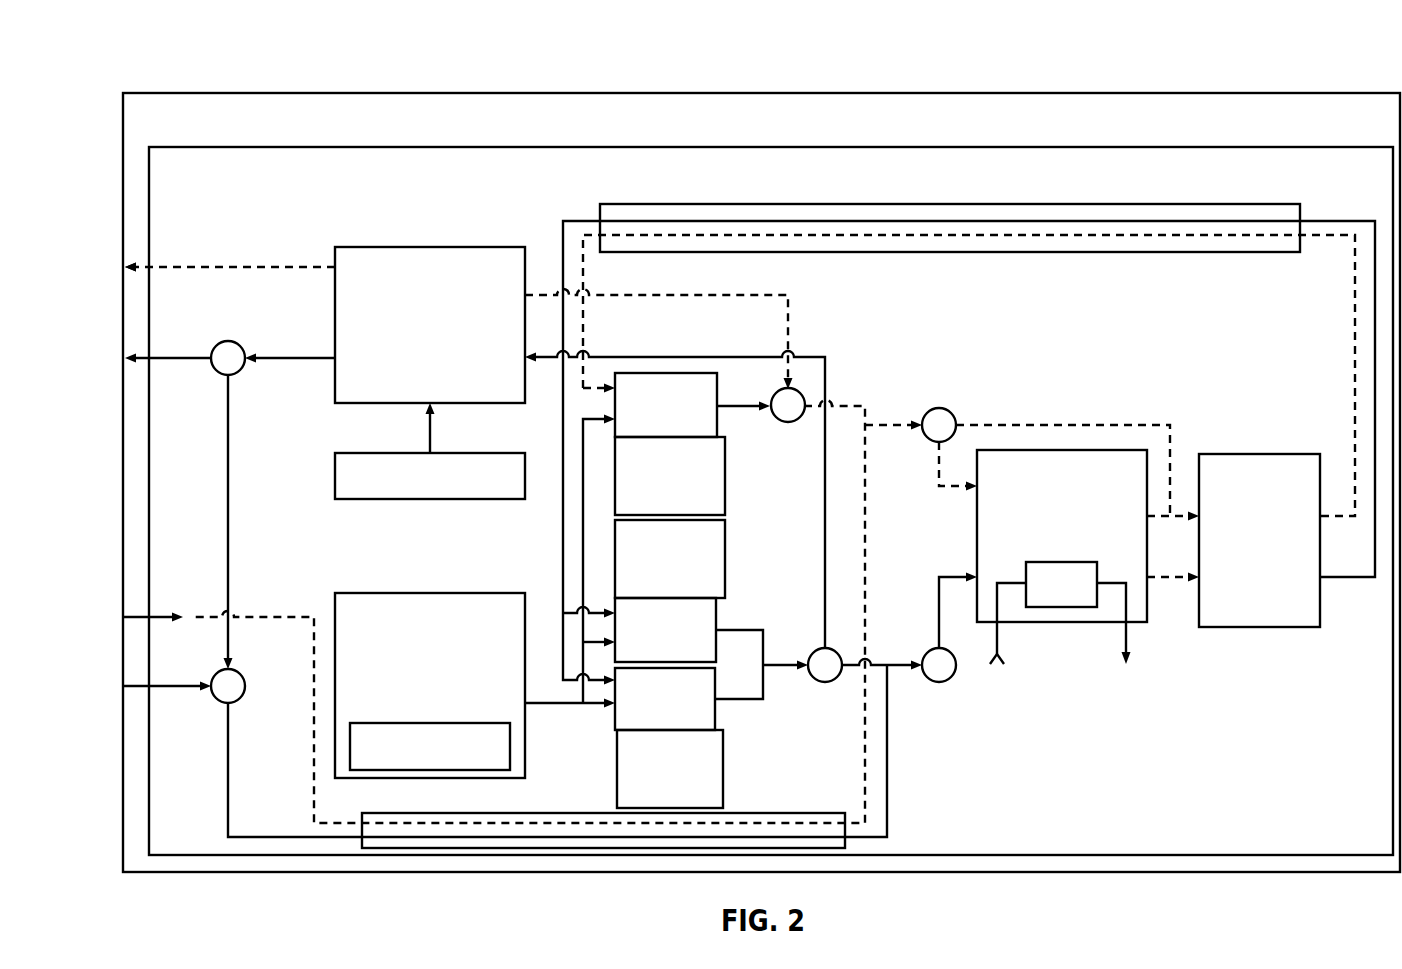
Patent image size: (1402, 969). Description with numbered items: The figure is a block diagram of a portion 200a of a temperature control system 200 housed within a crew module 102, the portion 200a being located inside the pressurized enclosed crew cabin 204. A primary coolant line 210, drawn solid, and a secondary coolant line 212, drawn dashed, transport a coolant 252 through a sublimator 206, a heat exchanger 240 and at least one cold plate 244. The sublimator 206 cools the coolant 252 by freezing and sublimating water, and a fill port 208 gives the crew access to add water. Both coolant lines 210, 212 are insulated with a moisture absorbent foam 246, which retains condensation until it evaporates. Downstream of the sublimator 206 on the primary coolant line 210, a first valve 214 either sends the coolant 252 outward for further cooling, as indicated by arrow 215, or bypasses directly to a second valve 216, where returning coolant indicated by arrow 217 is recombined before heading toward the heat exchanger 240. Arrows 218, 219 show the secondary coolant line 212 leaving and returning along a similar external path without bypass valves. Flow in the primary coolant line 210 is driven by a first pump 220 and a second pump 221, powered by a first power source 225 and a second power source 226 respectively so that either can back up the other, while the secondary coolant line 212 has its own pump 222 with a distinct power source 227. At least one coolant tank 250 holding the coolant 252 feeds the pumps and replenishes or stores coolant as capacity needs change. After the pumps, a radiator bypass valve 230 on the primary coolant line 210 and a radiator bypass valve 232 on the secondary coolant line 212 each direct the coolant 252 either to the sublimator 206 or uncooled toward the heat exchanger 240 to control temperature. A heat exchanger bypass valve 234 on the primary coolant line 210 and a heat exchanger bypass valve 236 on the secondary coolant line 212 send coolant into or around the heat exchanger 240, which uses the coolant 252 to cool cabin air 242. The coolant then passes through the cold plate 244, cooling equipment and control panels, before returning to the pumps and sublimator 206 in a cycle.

The temperature control system 200 is at (160, 44).
The portion of the temperature control system 200a is at (398, 44).
The crew module 102 is at (287, 93).
The pressurized enclosed crew cabin 204 is at (287, 147).
The sublimator 206 is at (475, 247).
The fill port 208 is at (475, 453).
The primary coolant line 210 is at (230, 510).
The secondary coolant line 212 is at (240, 266).
The first valve 214 is at (237, 373).
The arrow 215 is at (143, 353).
The second valve 216 is at (237, 701).
The arrow 217 is at (143, 681).
The arrow 218 is at (143, 262).
The arrow 219 is at (143, 612).
The first pump 220 is at (715, 712).
The second pump 221 is at (716, 622).
The pump 222 is at (717, 428).
The first power source 225 is at (723, 772).
The second power source 226 is at (725, 536).
The power source 227 is at (725, 466).
The radiator bypass valve 230 is at (835, 652).
The radiator bypass valve 232 is at (798, 391).
The heat exchanger bypass valve 234 is at (940, 683).
The heat exchanger bypass valve 236 is at (950, 410).
The heat exchanger 240 is at (1115, 450).
The air 242 is at (1062, 607).
The cold plate 244 is at (1285, 454).
The moisture absorbent foam 246 is at (1105, 204).
The coolant tank 250 is at (475, 594).
The coolant 252 is at (447, 723).